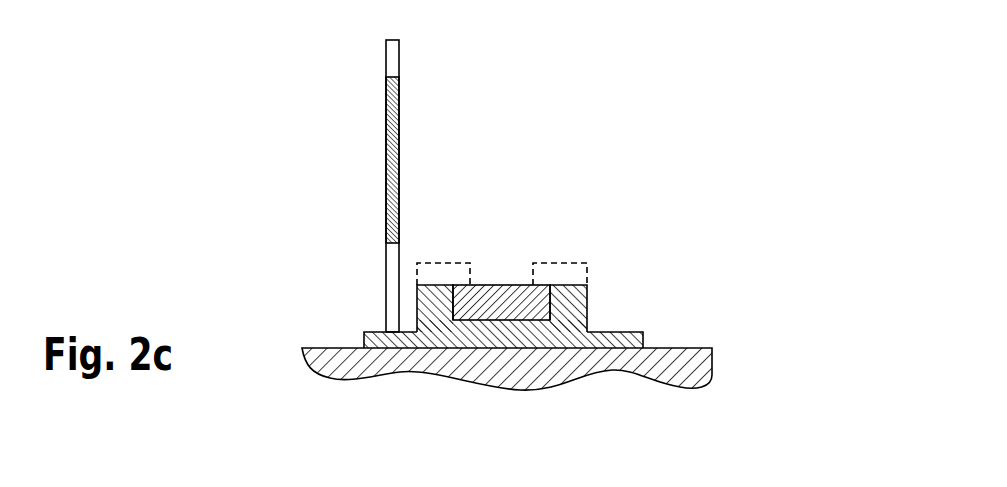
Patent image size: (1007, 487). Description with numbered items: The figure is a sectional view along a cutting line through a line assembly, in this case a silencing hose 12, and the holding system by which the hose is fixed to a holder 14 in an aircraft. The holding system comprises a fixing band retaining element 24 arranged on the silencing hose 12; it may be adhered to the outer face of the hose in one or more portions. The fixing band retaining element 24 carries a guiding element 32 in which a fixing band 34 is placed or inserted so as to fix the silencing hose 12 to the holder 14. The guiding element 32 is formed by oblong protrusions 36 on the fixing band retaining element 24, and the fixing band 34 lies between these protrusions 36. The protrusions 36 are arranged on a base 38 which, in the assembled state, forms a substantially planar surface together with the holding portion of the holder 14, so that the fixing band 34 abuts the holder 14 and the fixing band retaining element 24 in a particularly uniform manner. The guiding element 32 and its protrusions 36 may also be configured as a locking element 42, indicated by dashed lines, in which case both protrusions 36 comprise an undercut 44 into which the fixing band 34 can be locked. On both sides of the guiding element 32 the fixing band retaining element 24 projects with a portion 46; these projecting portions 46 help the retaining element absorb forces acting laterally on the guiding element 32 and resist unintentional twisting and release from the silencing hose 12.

The silencing hose 12 is at (690, 365).
The holder 14 is at (392, 150).
The fixing band retaining element 24 is at (654, 317).
The guiding element 32 is at (607, 270).
The fixing band 34 is at (496, 300).
The protrusion 36 is at (438, 307).
The base 38 is at (500, 333).
The locking element 42 is at (441, 277).
The undercut 44 is at (440, 300).
The projecting portion 46 is at (390, 338).